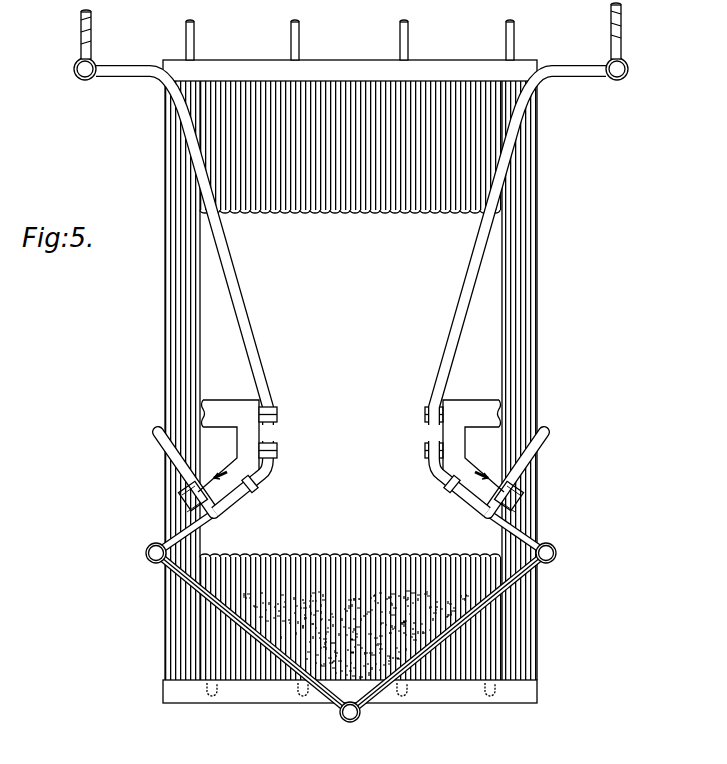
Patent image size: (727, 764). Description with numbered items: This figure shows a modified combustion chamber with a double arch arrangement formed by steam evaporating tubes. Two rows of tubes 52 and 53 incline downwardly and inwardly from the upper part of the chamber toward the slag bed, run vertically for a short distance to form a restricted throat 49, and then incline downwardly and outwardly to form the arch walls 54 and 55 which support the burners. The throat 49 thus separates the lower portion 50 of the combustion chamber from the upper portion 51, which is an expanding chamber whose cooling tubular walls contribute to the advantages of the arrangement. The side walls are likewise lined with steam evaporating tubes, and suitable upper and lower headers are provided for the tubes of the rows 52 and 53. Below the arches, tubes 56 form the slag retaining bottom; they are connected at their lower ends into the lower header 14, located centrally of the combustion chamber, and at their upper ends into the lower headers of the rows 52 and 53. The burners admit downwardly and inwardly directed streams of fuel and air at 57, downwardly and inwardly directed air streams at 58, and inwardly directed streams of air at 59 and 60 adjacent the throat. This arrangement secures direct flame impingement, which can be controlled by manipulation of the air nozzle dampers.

The lower header 14 is at (347, 723).
The restricted throat 49 is at (351, 380).
The lower portion of the combustion chamber 50 is at (351, 601).
The upper portion of the combustion chamber 51 is at (351, 186).
The row of tubes 52 is at (242, 322).
The row of tubes 53 is at (466, 300).
The arch wall 54 is at (240, 497).
The arch wall 55 is at (465, 498).
The slag retaining bottom tubes 56 is at (323, 699).
The fuel and air stream inlet 57 is at (214, 514).
The air stream inlet 58 is at (259, 481).
The air stream inlet 59 is at (277, 450).
The air stream inlet 60 is at (276, 412).